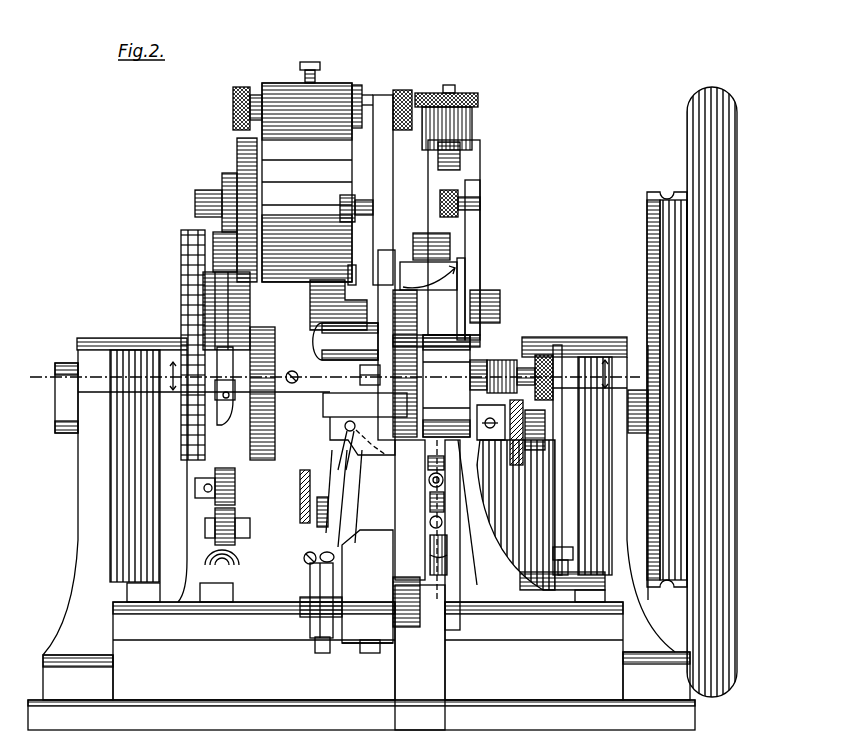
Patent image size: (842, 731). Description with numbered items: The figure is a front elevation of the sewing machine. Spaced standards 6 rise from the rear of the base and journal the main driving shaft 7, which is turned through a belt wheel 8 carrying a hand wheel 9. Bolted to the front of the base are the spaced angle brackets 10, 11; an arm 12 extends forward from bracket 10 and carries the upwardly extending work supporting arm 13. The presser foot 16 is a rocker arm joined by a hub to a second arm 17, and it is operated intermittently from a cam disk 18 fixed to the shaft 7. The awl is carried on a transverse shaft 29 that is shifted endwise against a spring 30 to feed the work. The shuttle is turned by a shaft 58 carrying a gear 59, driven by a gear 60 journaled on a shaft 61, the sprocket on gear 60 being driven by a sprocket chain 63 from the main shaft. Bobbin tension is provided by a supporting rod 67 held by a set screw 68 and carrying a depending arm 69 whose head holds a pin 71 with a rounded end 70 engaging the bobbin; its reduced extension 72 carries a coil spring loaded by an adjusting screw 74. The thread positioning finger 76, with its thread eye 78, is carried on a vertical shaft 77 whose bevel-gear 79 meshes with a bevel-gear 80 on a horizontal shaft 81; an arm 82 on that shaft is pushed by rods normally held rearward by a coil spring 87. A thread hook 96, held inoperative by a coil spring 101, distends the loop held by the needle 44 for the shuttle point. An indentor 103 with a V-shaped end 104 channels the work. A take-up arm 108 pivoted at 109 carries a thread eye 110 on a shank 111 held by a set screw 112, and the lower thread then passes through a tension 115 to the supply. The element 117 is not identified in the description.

The standards 6 is at (95, 510).
The main driving shaft 7 is at (55, 388).
The belt wheel 8 is at (665, 270).
The hand wheel 9 is at (712, 690).
The angle bracket 10 is at (192, 617).
The angle bracket 11 is at (525, 720).
The arm 12 is at (350, 646).
The work supporting arm 13 is at (367, 586).
The presser foot 16 is at (338, 340).
The second arm 17 is at (265, 447).
The cam disk 18 is at (227, 255).
The transverse shaft 29 is at (230, 390).
The spring 30 is at (250, 442).
The needle 44 is at (458, 268).
The shaft 58 is at (208, 197).
The gear 59 is at (240, 152).
The gear 60 is at (243, 298).
The shaft 61 is at (490, 306).
The sprocket chain 63 is at (183, 262).
The supporting rod 67 is at (405, 92).
The set screw 68 is at (310, 62).
The depending arm 69 is at (397, 158).
The rounded end 70 is at (374, 190).
The pin 71 is at (370, 204).
The reduced extension 72 is at (458, 198).
The adjusting screw 74 is at (466, 218).
The finger 76 is at (343, 490).
The vertical shaft 77 is at (313, 580).
The thread eye 78 is at (428, 463).
The bevel-gear 79 is at (350, 526).
The bevel-gear 80 is at (312, 530).
The horizontal shaft 81 is at (195, 492).
The arm 82 is at (210, 517).
The coil spring 87 is at (215, 557).
The thread hook 96 is at (400, 297).
The coil spring 101 is at (455, 247).
The indentor 103 is at (350, 270).
The V-shaped end 104 is at (374, 375).
The arm 108 is at (430, 528).
The pivot 109 is at (430, 560).
The thread eye 110 is at (430, 466).
The shank 111 is at (430, 486).
The set screw 112 is at (430, 508).
The tension 115 is at (485, 470).
The bracket 117 is at (333, 403).